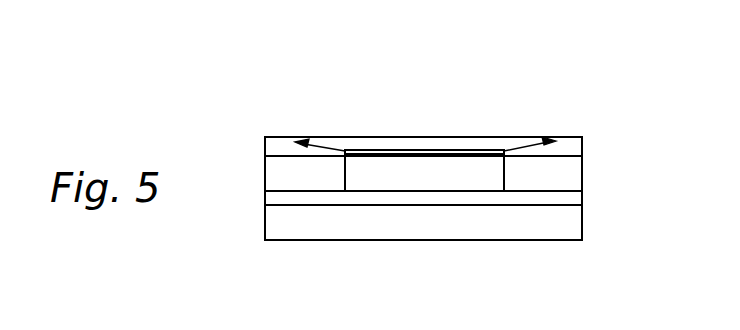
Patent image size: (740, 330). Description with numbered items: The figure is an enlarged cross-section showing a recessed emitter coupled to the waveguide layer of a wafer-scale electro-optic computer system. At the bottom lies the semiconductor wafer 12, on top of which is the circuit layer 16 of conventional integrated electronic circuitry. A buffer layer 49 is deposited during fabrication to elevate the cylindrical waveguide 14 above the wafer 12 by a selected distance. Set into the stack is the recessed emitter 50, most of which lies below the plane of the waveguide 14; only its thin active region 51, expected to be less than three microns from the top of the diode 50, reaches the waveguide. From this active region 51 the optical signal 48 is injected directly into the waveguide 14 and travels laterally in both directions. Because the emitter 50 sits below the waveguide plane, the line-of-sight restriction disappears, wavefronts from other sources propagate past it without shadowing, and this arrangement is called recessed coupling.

The semiconductor wafer 12 is at (582, 226).
The cylindrical waveguide 14 is at (272, 137).
The circuit layer 16 is at (378, 198).
The optical signal 48 is at (330, 145).
The buffer layer 49 is at (582, 177).
The recessed emitter 50 is at (428, 170).
The active region 51 is at (470, 155).